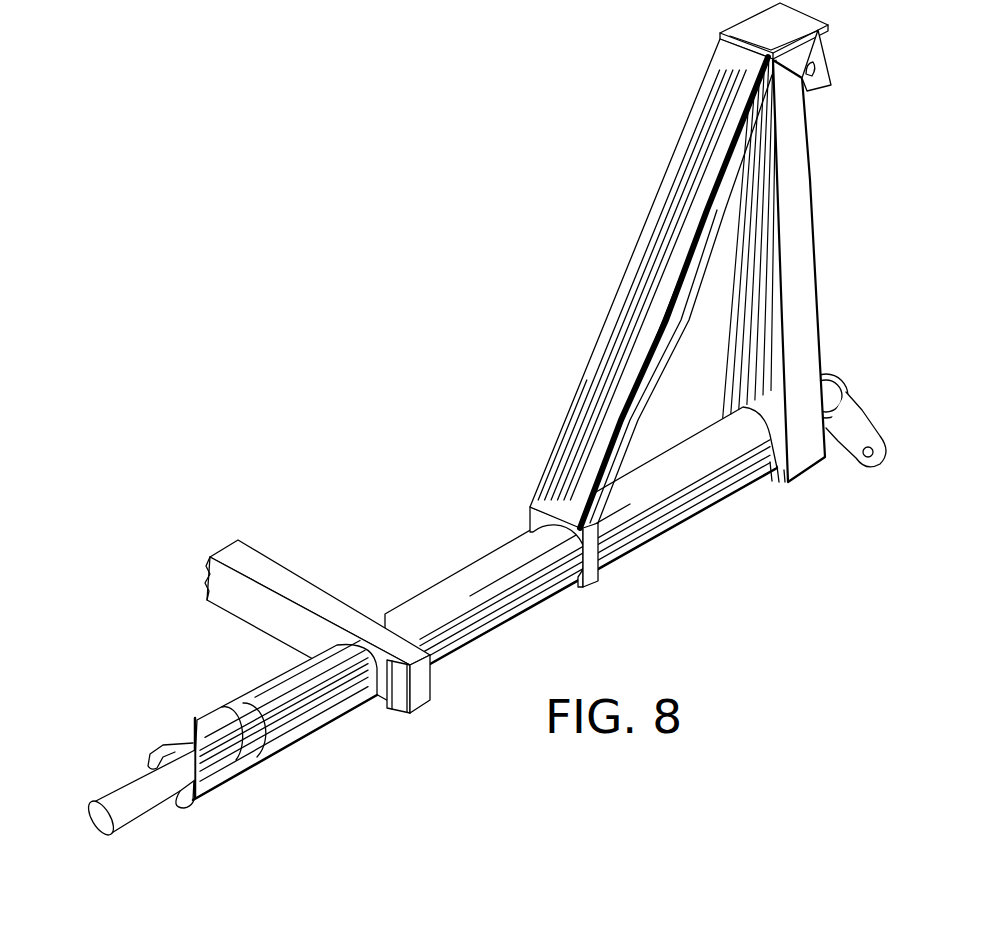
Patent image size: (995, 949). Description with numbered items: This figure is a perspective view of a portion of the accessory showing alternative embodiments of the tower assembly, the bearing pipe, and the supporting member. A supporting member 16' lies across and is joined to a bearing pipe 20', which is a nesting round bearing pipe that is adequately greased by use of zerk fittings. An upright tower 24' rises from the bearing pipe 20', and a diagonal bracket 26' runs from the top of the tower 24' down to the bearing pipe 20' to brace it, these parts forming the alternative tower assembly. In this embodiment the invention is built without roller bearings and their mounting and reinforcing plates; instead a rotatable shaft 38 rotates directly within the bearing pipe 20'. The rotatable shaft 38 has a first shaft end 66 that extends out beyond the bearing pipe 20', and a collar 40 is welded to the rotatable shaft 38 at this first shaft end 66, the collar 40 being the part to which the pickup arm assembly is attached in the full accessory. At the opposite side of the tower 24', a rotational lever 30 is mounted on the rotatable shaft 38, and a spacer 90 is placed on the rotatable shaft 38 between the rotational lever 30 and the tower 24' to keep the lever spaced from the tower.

The supporting member 16' is at (317, 626).
The bearing pipe 20' is at (485, 603).
The tower 24' is at (798, 242).
The bracket 26' is at (651, 313).
The rotational lever 30 is at (875, 430).
The rotatable shaft 38 is at (117, 809).
The collar 40 is at (200, 722).
The first shaft end 66 is at (90, 832).
The spacer 90 is at (843, 386).